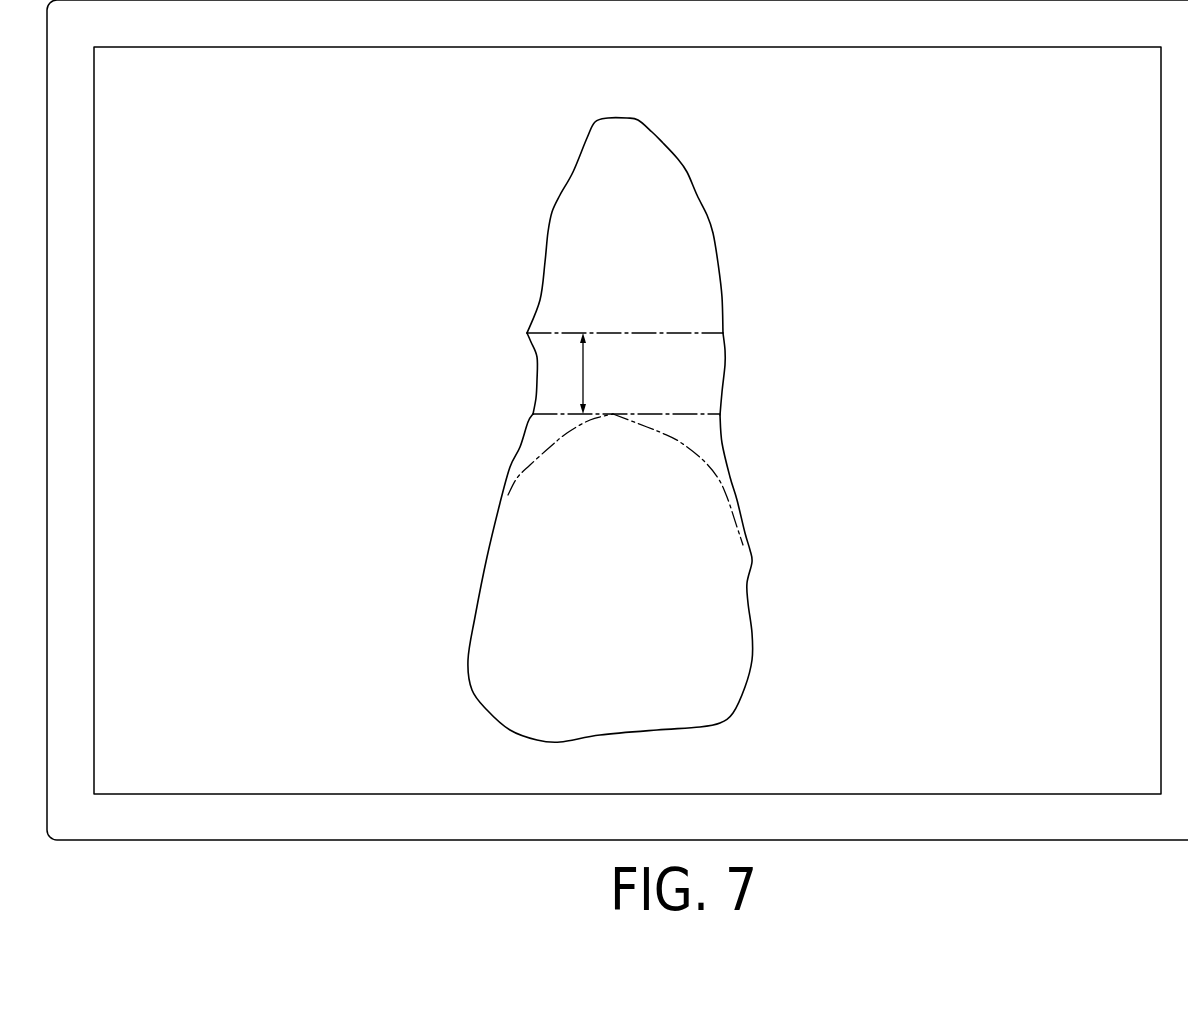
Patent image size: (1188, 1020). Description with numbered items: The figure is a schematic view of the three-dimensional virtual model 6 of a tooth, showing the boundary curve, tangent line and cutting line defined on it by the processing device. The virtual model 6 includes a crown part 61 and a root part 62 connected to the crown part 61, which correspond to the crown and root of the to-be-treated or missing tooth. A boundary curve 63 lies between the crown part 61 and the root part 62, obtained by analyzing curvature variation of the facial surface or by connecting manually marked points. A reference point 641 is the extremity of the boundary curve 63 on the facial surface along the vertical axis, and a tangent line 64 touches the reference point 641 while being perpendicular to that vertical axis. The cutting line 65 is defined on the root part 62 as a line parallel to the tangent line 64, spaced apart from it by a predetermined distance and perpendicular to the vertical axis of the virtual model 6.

The 3D virtual model 6 is at (466, 280).
The crown part 61 is at (710, 623).
The root part 62 is at (658, 212).
The boundary curve 63 is at (703, 460).
The tangent line 64 is at (678, 414).
The reference point 641 is at (613, 414).
The cutting line 65 is at (663, 333).